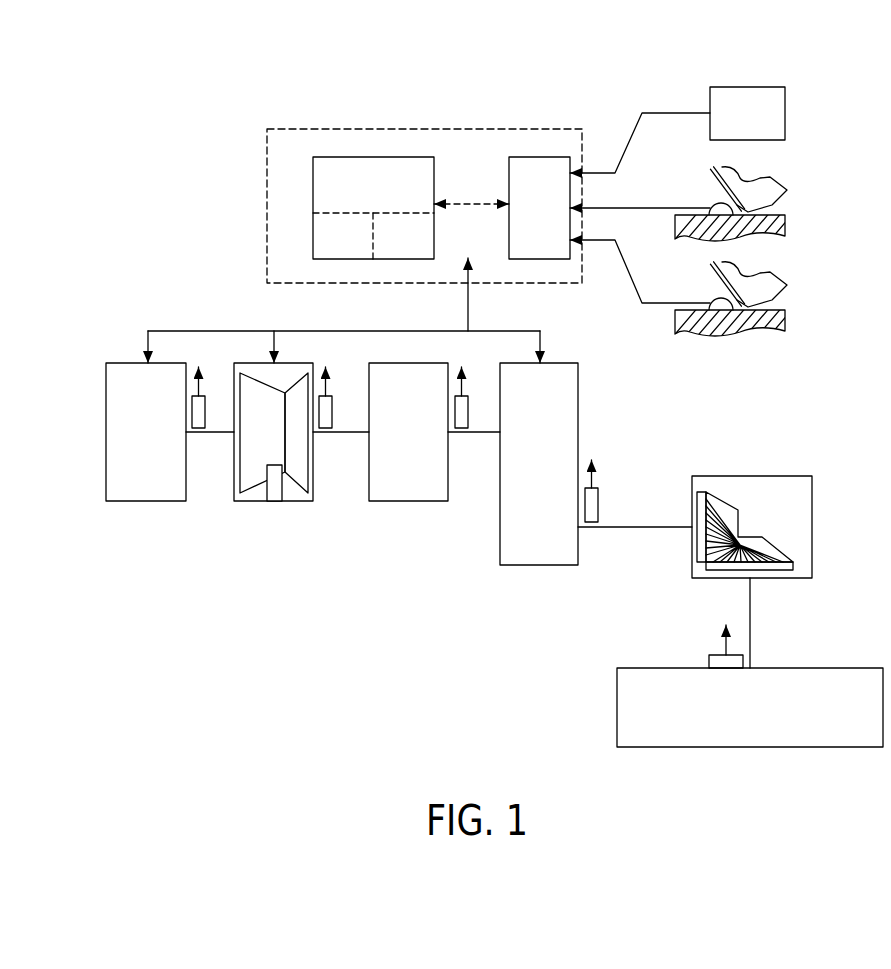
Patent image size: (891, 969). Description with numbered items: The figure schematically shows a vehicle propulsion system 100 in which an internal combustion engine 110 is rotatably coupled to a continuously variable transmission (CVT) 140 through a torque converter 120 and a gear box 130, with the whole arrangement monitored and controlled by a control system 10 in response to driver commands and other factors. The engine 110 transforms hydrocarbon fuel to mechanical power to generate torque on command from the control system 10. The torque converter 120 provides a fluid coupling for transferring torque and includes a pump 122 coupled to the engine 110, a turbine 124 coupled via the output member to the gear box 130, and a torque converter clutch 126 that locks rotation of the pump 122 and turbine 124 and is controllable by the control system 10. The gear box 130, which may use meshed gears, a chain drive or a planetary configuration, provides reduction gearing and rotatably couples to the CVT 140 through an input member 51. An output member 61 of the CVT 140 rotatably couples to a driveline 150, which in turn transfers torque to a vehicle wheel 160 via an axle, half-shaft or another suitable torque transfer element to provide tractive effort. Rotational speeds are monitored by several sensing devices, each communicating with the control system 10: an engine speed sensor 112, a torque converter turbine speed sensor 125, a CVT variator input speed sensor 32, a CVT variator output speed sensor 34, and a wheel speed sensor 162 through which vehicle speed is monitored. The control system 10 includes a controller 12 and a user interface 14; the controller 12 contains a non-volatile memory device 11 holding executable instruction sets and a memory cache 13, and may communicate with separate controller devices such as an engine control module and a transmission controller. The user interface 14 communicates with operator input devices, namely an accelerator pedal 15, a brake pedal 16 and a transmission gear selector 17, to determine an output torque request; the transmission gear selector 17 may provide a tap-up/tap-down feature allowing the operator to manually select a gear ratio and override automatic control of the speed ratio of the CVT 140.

The vehicle propulsion system 100 is at (140, 115).
The control system 10 is at (320, 127).
The non-volatile memory device 11 is at (420, 243).
The controller 12 is at (390, 157).
The memory cache 13 is at (320, 235).
The user interface 14 is at (540, 157).
The accelerator pedal 15 is at (708, 305).
The brake pedal 16 is at (708, 210).
The transmission gear selector 17 is at (748, 87).
The internal combustion engine 110 is at (128, 363).
The engine speed sensor 112 is at (199, 428).
The torque converter 120 is at (250, 363).
The pump 122 is at (257, 490).
The turbine 124 is at (287, 478).
The torque converter turbine speed sensor 125 is at (326, 428).
The torque converter clutch 126 is at (275, 498).
The gear box 130 is at (410, 363).
The CVT variator input speed sensor 32 is at (463, 432).
The input member 51 is at (498, 428).
The continuously variable transmission 140 is at (553, 363).
The CVT variator output speed sensor 34 is at (591, 522).
The output member 61 is at (642, 526).
The driveline 150 is at (748, 476).
The vehicle wheel 160 is at (617, 705).
The wheel speed sensor 162 is at (709, 660).